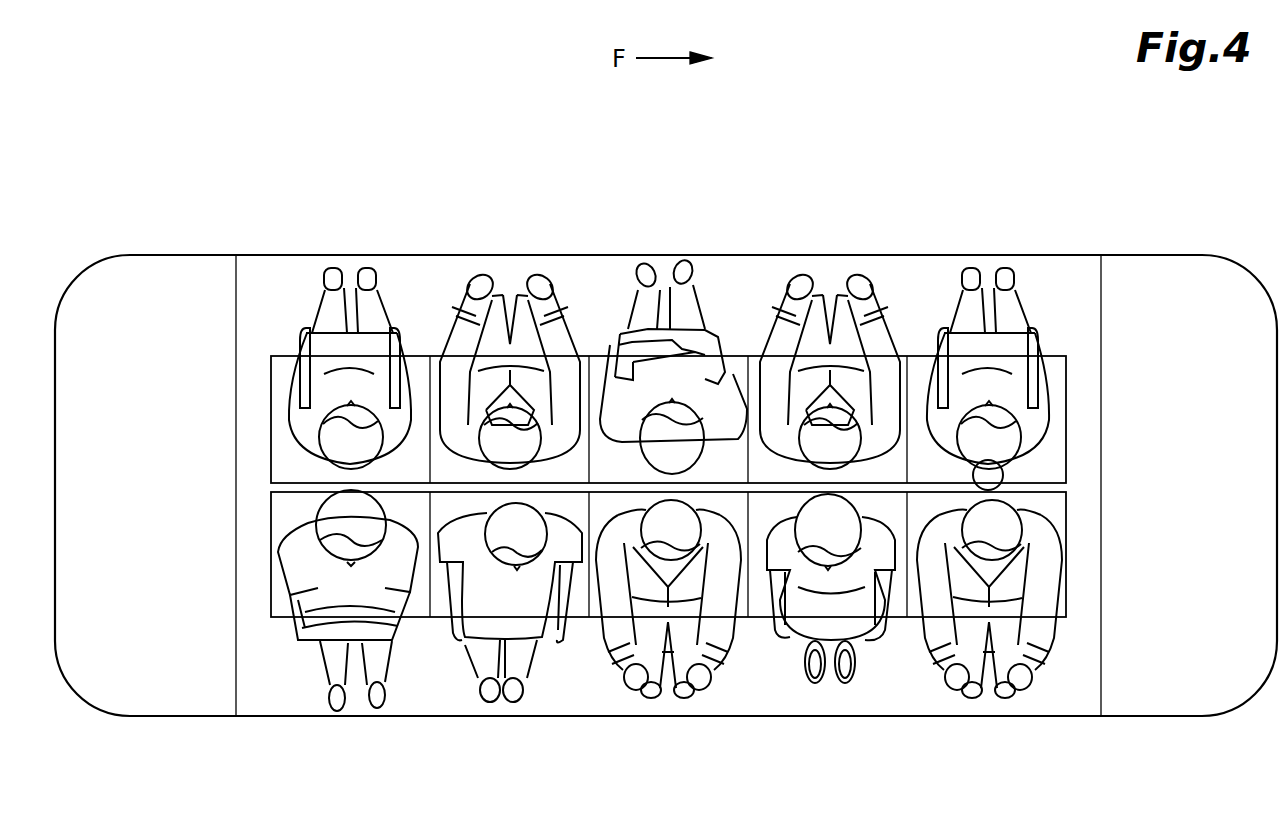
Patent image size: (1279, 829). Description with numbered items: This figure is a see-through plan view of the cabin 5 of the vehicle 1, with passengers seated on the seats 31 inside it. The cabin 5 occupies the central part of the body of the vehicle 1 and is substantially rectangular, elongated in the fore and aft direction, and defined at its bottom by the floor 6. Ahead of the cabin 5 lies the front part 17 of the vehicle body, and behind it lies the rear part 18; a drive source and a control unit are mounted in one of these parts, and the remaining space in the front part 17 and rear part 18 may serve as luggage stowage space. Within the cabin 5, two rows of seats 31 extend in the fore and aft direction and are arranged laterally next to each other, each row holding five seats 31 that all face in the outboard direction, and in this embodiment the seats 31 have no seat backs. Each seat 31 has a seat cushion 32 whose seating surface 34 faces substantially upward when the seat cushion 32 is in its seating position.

The vehicle 1 is at (998, 178).
The cabin 5 is at (300, 256).
The floor 6 is at (430, 276).
The front part 17 is at (1153, 697).
The rear part 18 is at (163, 695).
The seat 31 is at (1070, 406).
The seat cushion 32 is at (668, 554).
The seating surface 34 is at (913, 363).